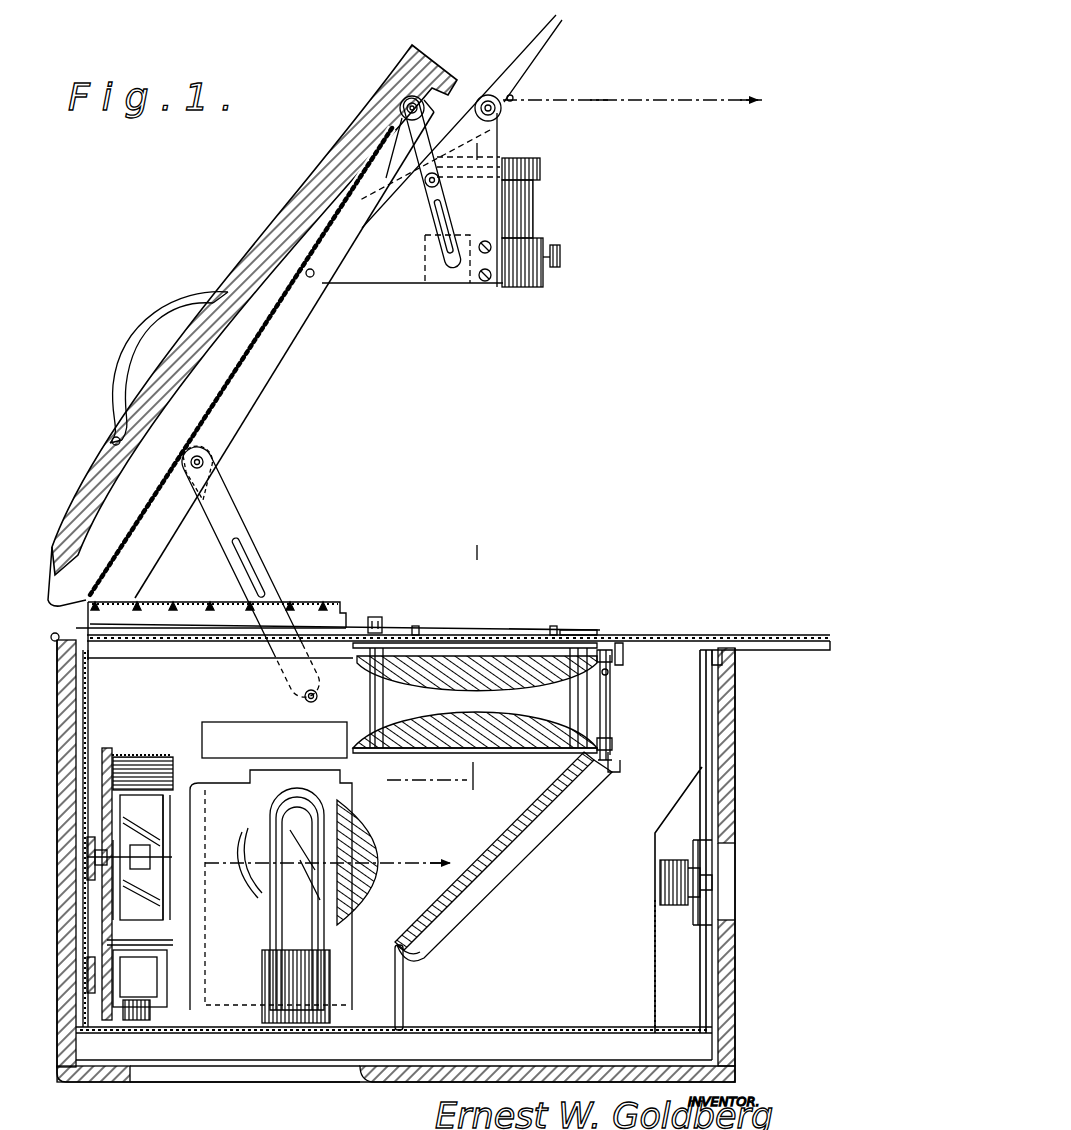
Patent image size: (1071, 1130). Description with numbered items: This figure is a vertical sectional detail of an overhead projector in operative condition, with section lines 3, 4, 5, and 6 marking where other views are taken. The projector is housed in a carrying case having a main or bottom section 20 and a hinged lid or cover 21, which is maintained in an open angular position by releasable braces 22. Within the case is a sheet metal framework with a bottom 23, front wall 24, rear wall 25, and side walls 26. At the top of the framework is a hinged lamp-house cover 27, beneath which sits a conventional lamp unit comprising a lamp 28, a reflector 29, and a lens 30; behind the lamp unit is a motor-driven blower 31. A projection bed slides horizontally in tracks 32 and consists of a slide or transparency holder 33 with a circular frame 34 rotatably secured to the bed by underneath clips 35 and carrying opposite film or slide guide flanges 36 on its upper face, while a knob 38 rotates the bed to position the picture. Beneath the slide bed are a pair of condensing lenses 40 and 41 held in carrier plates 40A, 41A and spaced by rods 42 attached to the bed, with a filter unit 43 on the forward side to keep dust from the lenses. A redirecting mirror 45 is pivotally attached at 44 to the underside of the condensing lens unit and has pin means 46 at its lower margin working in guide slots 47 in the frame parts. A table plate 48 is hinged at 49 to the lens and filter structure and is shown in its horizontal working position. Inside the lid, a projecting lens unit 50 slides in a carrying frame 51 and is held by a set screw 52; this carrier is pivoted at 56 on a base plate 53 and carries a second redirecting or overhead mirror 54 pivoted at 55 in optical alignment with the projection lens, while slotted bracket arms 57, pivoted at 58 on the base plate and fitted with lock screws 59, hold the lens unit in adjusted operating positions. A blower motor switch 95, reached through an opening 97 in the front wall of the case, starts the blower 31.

The section line 3- 3 is at (800, 880).
The section line 4- 4 is at (152, 1105).
The section line 5- 5 is at (358, 1105).
The section line 6- 6 is at (598, 1105).
The main or bottom section 20 is at (738, 763).
The hinged lid or cover 21 is at (248, 282).
The releasable braces 22 is at (235, 520).
The bottom 23 is at (548, 1010).
The front wall 24 is at (700, 1012).
The rear wall 25 is at (88, 715).
The side walls 26 is at (580, 931).
The hinged lamp-house cover 27 is at (305, 602).
The lamp 28 is at (296, 905).
The reflector 29 is at (255, 835).
The lens 30 is at (372, 812).
The motor-driven blower 31 is at (148, 880).
The tracks 32 is at (362, 628).
The slide or transparency holder 33 is at (500, 632).
The circular frame 34 is at (578, 635).
The underneath clips 35 is at (363, 657).
The film or slide guide flanges 36 is at (416, 626).
The knob 38 is at (378, 618).
The condensing lens 40 is at (420, 727).
The carrier plate 40A is at (612, 742).
The condensing lens 41 is at (524, 678).
The carrier plate 41A is at (612, 695).
The rods 42 is at (378, 698).
The filter unit 43 is at (615, 720).
The pivotal attachment 44 is at (583, 790).
The redirecting mirror 45 is at (483, 812).
The pin means 46 is at (413, 950).
The guide slots 47 is at (402, 995).
The table plate 48 is at (712, 641).
The hinge 49 is at (623, 660).
The projecting lens unit 50 is at (535, 220).
The carrying frame 51 is at (515, 284).
The set screw 52 is at (562, 257).
The base plate 53 is at (360, 176).
The second redirecting or overhead mirror 54 is at (545, 50).
The pivot 55 is at (500, 114).
The pivot 56 is at (322, 281).
The slotted bracket arms 57 is at (425, 200).
The pivot 58 is at (437, 112).
The lock screws 59 is at (440, 182).
The blower motor switch 95 is at (712, 882).
The opening 97 is at (740, 910).